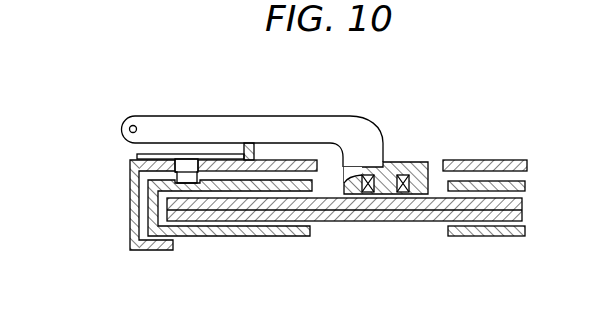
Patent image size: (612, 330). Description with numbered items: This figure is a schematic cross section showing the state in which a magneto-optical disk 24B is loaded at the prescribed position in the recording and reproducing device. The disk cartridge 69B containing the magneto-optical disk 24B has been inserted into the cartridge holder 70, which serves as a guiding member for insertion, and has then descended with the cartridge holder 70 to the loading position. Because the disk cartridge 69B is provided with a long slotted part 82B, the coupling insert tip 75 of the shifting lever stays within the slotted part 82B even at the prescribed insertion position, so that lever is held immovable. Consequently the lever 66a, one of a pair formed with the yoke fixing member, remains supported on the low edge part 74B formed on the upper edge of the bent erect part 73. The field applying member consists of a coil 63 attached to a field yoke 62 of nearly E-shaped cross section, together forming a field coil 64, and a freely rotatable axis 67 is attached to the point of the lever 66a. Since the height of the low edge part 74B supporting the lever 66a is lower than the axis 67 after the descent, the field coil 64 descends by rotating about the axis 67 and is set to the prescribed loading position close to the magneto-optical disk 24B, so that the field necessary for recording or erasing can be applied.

The magneto-optical disk 24B is at (428, 221).
The field yoke 62 is at (398, 184).
The coil 63 is at (369, 183).
The field coil 64 is at (413, 156).
The lever 66a is at (253, 122).
The axis 67 is at (133, 125).
The disk cartridge 69B is at (275, 237).
The cartridge holder 70 is at (479, 161).
The bent erect part 73 is at (137, 157).
The low edge part 74B is at (247, 143).
The coupling insert tip 75 is at (186, 159).
The slotted part 82B is at (198, 237).